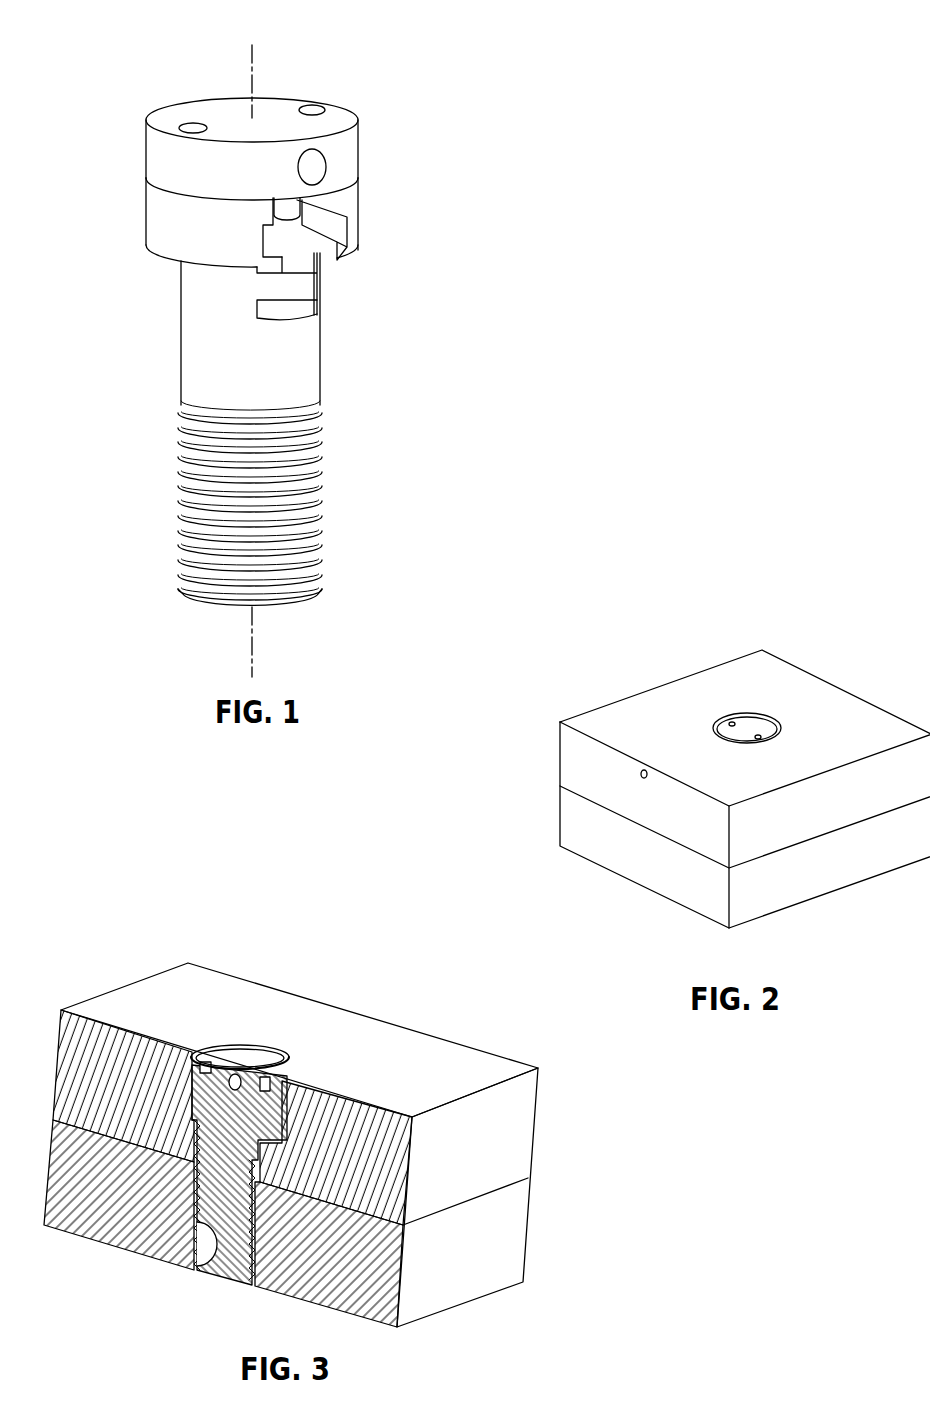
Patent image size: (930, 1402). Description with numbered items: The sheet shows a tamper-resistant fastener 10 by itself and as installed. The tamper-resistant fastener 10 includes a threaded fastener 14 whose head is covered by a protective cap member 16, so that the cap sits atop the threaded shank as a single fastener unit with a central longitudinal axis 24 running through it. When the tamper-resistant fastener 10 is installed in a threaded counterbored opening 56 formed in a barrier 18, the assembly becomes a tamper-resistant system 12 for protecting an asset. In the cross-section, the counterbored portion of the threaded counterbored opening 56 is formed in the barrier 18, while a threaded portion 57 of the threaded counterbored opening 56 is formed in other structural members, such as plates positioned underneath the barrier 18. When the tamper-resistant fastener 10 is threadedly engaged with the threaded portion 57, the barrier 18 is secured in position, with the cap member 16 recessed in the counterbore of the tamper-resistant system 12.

In FIG. 1, the tamper-resistant fastener 10 is at (126, 56).
In FIG. 2, the tamper-resistant fastener 10 is at (749, 690).
In FIG. 3, the tamper-resistant fastener 10 is at (224, 1020).
In FIG. 2, the tamper-resistant system 12 is at (585, 606).
In FIG. 3, the tamper-resistant system 12 is at (98, 908).
In FIG. 1, the threaded fastener 14 is at (146, 208).
In FIG. 1, the protective cap member 16 is at (146, 150).
In FIG. 2, the barrier 18 is at (560, 752).
In FIG. 3, the barrier 18 is at (538, 1125).
In FIG. 1, the longitudinal axis 24 is at (252, 60).
In FIG. 3, the threaded counterbored opening 56 is at (266, 1048).
In FIG. 3, the threaded portion 57 is at (192, 1262).